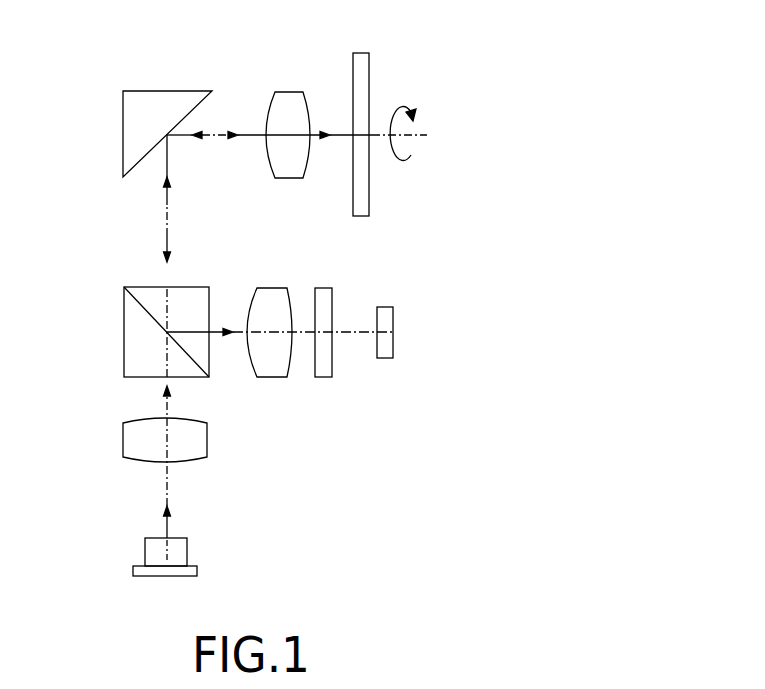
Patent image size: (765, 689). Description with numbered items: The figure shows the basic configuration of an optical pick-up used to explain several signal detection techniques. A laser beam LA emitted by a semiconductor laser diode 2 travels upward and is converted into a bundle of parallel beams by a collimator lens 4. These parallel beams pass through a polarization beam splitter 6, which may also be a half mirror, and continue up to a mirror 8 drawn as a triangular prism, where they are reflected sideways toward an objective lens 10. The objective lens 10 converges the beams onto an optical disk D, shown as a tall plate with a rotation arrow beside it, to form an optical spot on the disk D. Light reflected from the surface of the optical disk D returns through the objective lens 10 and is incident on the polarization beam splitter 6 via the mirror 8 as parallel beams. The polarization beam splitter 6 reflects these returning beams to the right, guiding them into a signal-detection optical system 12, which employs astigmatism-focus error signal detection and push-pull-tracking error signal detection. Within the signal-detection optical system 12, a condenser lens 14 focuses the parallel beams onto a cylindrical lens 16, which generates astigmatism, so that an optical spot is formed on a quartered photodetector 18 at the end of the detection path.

The semiconductor laser diode 2 is at (187, 552).
The laser beam LA is at (167, 493).
The collimator lens 4 is at (207, 440).
The polarization beam splitter 6 is at (124, 338).
The mirror 8 is at (160, 91).
The objective lens 10 is at (290, 92).
The optical disk D is at (360, 53).
The signal-detection optical system 12 is at (339, 329).
The condenser lens 14 is at (270, 377).
The cylindrical lens 16 is at (322, 377).
The quartered photodetector 18 is at (384, 358).